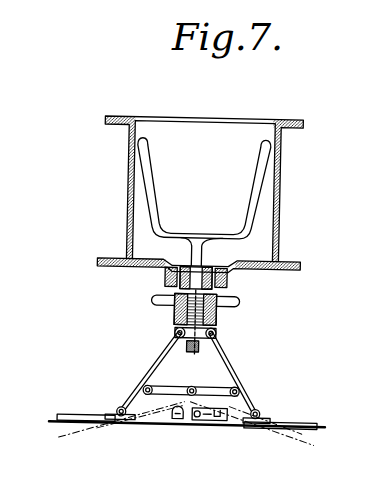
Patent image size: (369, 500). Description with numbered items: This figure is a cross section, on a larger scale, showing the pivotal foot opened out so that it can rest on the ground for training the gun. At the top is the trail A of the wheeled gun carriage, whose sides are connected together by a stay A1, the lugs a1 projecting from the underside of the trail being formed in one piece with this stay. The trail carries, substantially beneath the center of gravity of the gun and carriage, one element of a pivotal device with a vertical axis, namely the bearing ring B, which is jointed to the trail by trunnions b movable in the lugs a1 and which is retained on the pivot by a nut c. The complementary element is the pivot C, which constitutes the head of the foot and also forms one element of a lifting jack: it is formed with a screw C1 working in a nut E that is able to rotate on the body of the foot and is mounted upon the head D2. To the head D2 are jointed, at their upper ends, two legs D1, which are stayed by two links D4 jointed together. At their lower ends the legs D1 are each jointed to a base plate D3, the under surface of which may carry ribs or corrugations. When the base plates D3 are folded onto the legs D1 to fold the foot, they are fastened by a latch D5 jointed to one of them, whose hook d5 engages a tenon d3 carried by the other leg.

The trail A is at (126, 185).
The stay A1 is at (145, 198).
The trunnions b is at (128, 260).
The nut c is at (200, 262).
The lugs a1 is at (264, 286).
The bearing ring B is at (207, 288).
The pivot C is at (173, 300).
The nut E is at (178, 310).
The screw C1 is at (188, 343).
The head D2 is at (197, 332).
The legs D1 is at (254, 359).
The links D4 is at (215, 382).
The base plates D3 is at (301, 413).
The tenon d3 is at (183, 415).
The latch D5 is at (216, 418).
The hook d5 is at (235, 411).